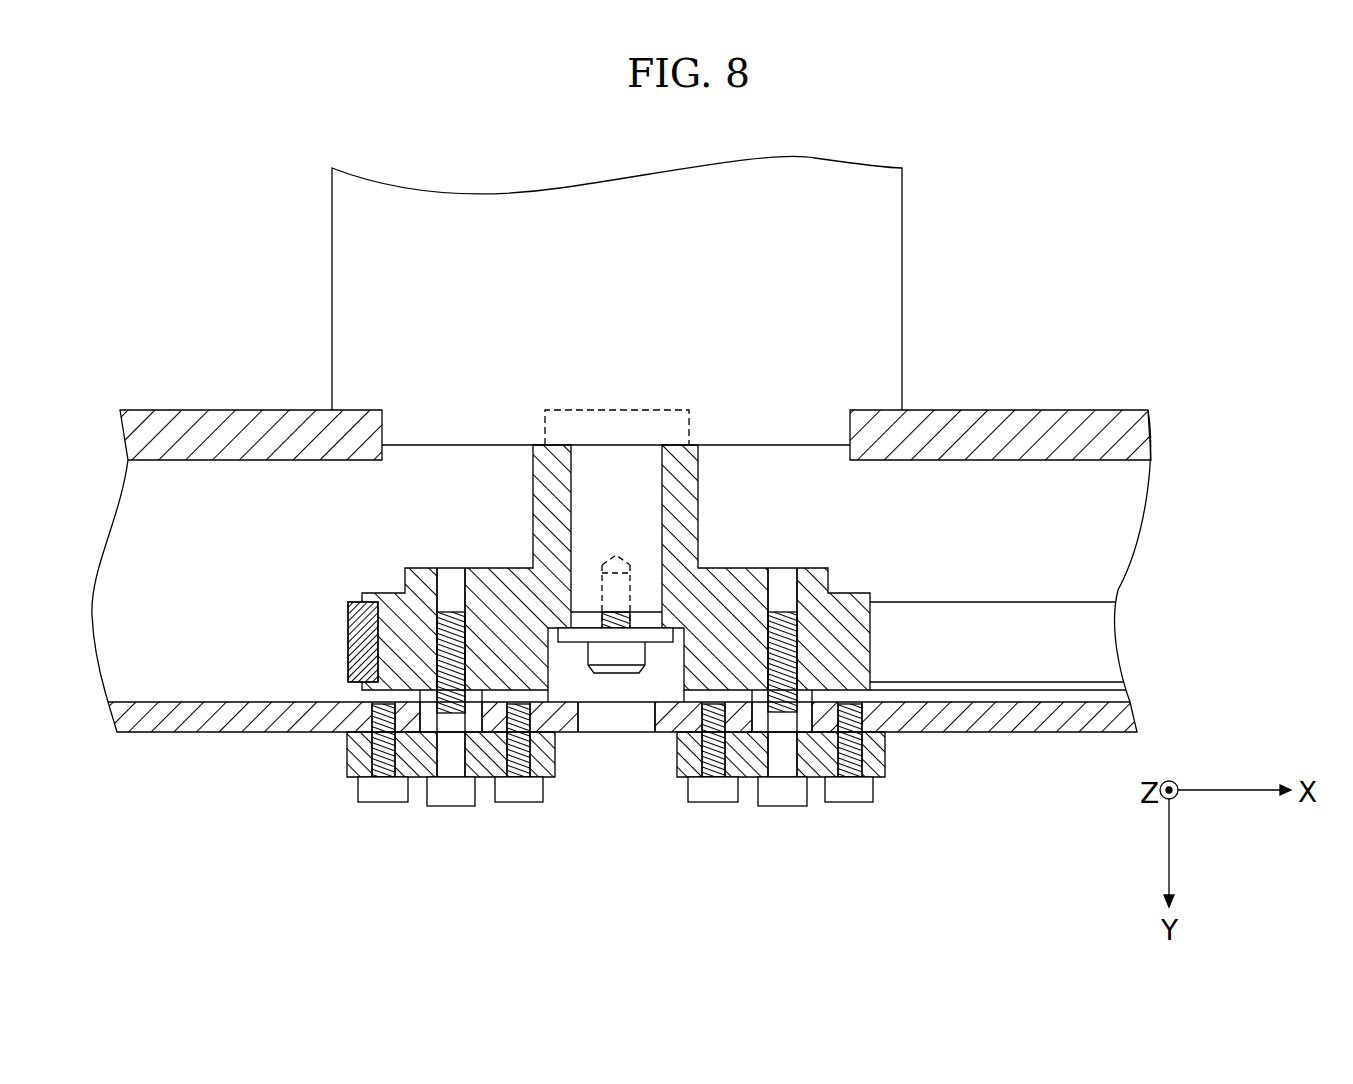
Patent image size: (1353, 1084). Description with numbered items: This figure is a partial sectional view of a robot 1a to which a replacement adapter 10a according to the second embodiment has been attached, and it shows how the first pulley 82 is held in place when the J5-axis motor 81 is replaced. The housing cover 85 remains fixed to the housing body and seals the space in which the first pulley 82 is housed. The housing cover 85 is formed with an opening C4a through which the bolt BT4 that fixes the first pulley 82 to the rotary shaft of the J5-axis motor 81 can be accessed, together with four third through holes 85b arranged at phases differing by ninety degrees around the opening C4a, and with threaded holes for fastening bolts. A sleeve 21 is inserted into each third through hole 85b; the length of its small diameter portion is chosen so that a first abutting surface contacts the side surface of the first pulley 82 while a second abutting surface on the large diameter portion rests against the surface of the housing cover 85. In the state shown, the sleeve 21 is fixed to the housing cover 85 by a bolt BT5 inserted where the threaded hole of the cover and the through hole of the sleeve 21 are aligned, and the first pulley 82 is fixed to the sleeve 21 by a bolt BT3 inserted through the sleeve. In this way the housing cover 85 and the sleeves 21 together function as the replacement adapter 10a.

The machine tool / gantry structure 1a is at (970, 358).
The J5-axis motor 81 is at (392, 311).
The first pulley 82 is at (870, 633).
The housing cover 85 is at (1000, 733).
The third through hole 85b is at (432, 712).
The sleeve 21 is at (347, 755).
The replacement adapter 10a is at (622, 799).
The bolt BT3 is at (450, 807).
The bolt BT4 is at (615, 675).
The bolt BT5 is at (378, 803).
The opening C4a is at (655, 710).